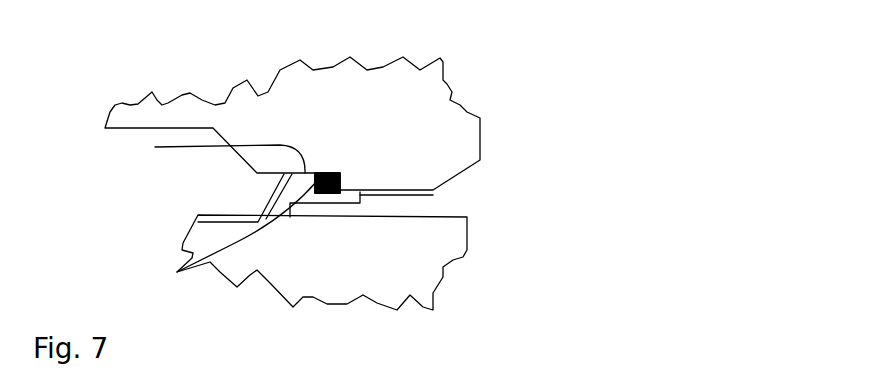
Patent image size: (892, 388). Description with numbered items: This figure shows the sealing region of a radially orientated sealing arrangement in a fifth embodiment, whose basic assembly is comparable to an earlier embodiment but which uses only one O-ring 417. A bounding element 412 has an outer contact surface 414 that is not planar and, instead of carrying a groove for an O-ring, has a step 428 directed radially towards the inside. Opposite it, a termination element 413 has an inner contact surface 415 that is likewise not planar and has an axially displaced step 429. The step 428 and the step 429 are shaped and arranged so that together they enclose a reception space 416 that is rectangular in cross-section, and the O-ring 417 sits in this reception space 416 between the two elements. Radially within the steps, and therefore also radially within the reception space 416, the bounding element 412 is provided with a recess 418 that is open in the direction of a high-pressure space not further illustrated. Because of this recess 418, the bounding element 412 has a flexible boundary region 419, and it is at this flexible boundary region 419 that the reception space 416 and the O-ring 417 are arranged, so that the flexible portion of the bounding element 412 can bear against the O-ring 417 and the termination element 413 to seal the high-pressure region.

The bounding element 412 is at (337, 293).
The termination element 413 is at (292, 90).
The outer contact surface 414 is at (198, 218).
The inner contact surface 415 is at (205, 154).
The reception space 416 is at (337, 177).
The O-ring 417 is at (325, 173).
The recess 418 is at (350, 210).
The flexible boundary region 419 is at (433, 195).
The step 428 is at (177, 272).
The step 429 is at (340, 180).